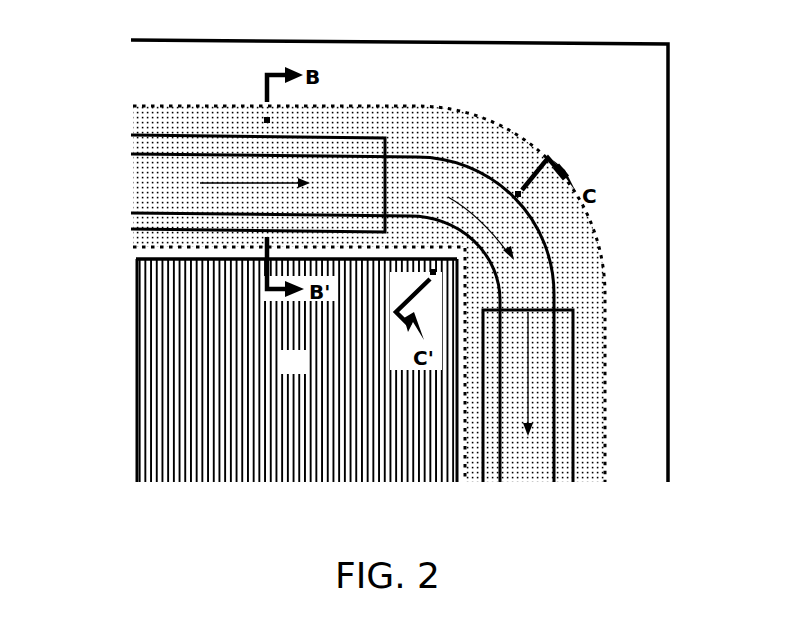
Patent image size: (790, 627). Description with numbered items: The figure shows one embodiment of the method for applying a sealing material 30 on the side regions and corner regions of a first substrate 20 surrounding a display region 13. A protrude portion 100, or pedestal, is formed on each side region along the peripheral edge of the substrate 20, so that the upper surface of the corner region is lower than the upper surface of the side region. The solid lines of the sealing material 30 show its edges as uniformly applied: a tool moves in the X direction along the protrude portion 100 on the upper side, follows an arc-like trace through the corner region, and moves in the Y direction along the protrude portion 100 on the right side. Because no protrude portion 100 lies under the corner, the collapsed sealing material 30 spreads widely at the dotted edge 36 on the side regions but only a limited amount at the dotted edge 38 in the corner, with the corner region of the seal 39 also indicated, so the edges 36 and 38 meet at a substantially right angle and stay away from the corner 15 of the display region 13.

The first substrate 20 is at (433, 42).
The edge of the sealing material on the side region 36 is at (165, 104).
The protrude portion 100 is at (148, 133).
The sealing material 30 is at (143, 184).
The bend region 39 is at (480, 250).
The edge of the sealing material on the corner region 38 is at (554, 271).
The corner of the pixel region 15 is at (460, 268).
The display region 13 is at (304, 373).